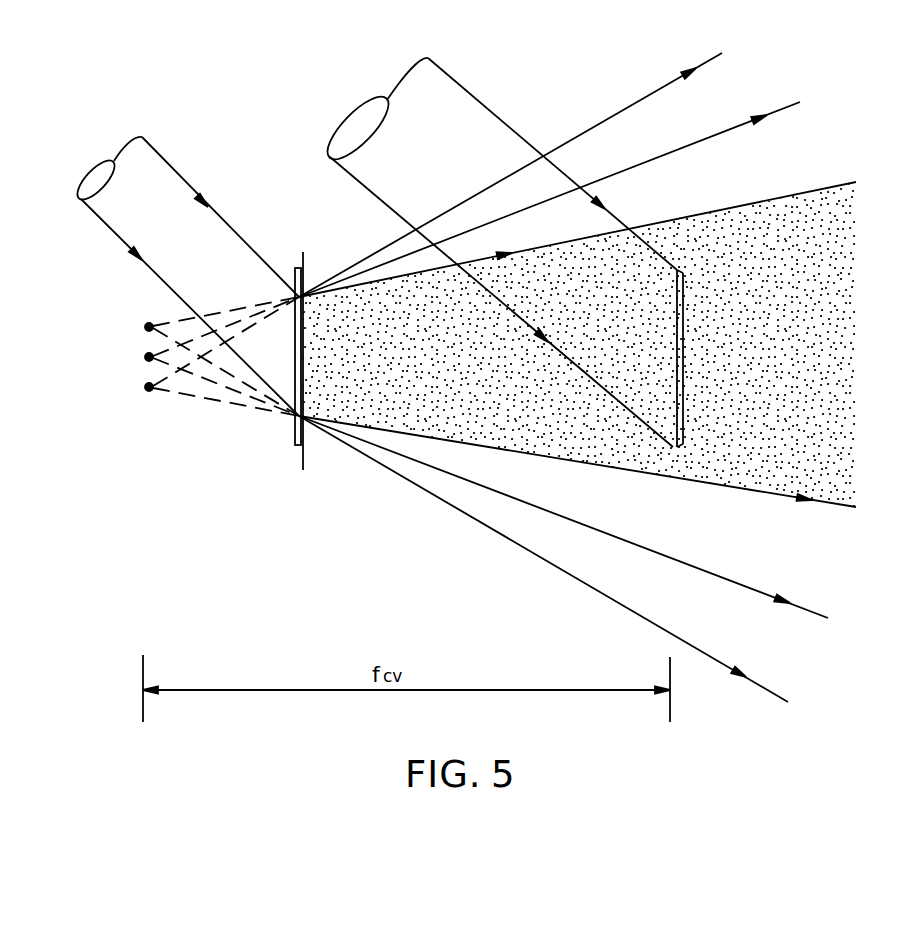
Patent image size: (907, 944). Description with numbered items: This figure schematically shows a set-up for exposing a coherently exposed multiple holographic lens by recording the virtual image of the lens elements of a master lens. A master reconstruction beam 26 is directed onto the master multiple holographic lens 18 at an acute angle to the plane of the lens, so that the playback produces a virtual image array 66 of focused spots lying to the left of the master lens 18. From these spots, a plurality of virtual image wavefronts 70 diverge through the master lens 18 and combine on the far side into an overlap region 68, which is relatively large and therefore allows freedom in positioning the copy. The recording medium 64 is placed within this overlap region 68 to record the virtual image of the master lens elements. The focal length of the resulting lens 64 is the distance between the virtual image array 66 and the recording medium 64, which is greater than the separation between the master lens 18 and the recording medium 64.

The master reconstruction beam 26 is at (160, 158).
The master multiple holographic lens 18 is at (294, 428).
The recording medium 64 is at (684, 325).
The virtual image array 66 is at (142, 405).
The overlap region 68 is at (830, 229).
The virtual image wavefronts 70 is at (222, 418).